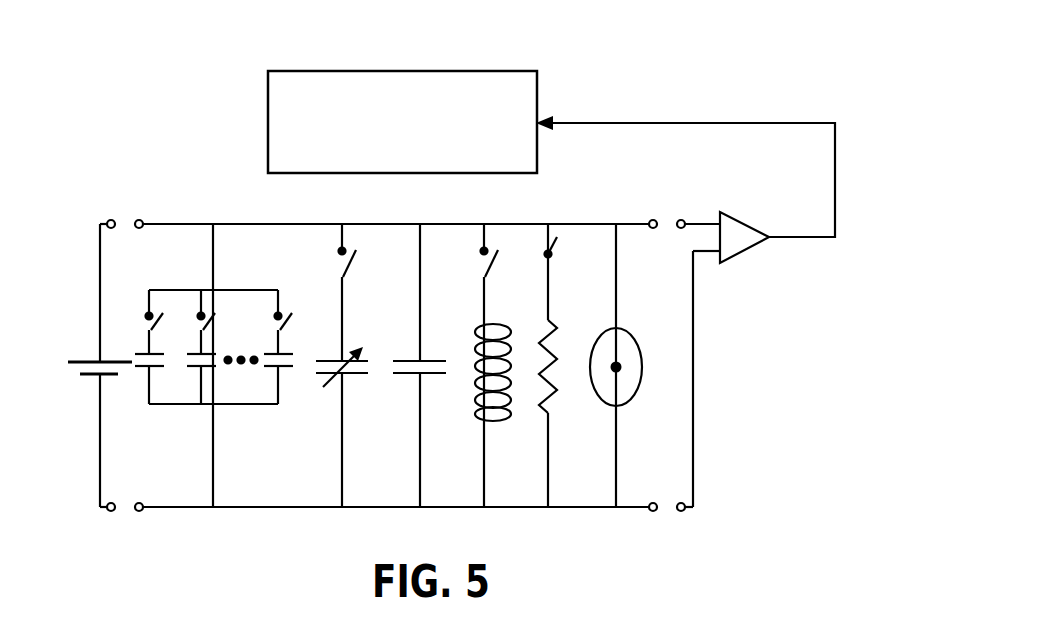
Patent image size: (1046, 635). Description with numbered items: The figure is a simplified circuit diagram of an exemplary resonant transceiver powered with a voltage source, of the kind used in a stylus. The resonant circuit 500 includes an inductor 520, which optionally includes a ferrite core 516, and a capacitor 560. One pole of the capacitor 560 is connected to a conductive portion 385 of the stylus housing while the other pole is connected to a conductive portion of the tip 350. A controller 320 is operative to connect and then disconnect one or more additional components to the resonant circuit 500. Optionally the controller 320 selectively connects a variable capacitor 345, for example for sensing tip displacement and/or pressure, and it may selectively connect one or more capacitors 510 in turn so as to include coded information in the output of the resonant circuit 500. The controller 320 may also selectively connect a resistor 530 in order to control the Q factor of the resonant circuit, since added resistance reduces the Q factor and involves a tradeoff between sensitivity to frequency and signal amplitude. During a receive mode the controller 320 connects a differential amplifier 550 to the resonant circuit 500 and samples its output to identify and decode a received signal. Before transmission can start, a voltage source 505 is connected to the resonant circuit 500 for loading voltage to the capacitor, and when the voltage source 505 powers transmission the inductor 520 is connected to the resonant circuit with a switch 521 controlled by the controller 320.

The resonant circuit 500 is at (158, 107).
The controller 320 is at (393, 71).
The voltage source 505 is at (88, 358).
The capacitors 510 is at (178, 290).
The variable capacitor 345 is at (358, 377).
The capacitor 560 is at (424, 377).
The switch 521 is at (487, 265).
The ferrite core 516 is at (483, 323).
The inductor 520 is at (490, 427).
The resistor 530 is at (563, 347).
The tip 350 is at (620, 365).
The conductive portion of stylus housing 385 is at (622, 405).
The differential amplifier 550 is at (745, 252).